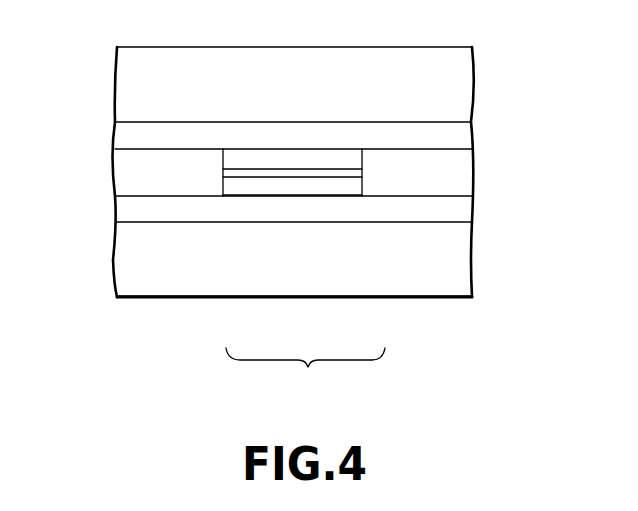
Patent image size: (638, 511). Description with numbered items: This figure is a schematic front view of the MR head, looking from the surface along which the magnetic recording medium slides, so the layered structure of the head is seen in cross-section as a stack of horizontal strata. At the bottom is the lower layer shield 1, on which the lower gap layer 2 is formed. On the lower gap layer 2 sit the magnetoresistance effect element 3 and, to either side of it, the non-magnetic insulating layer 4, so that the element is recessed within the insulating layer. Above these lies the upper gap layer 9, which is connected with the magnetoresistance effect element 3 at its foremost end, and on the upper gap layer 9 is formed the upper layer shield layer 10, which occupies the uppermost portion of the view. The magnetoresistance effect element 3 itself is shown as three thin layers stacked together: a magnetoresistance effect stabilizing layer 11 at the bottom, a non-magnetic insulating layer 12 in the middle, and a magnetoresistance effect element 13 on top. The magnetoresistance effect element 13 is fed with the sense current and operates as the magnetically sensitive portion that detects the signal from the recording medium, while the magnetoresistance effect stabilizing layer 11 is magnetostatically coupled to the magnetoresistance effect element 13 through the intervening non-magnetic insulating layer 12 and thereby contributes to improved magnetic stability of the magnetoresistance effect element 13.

The lower layer shield 1 is at (455, 263).
The lower gap layer 2 is at (458, 210).
The magnetoresistance effect element 3 is at (305, 376).
The non-magnetic insulating layer 4 is at (460, 175).
The upper gap layer 9 is at (458, 139).
The upper layer shield layer 10 is at (465, 83).
The magnetoresistance effect stabilizing layer 11 is at (272, 187).
The non-magnetic insulating layer 12 is at (315, 172).
The magnetoresistance effect element 13 is at (342, 161).